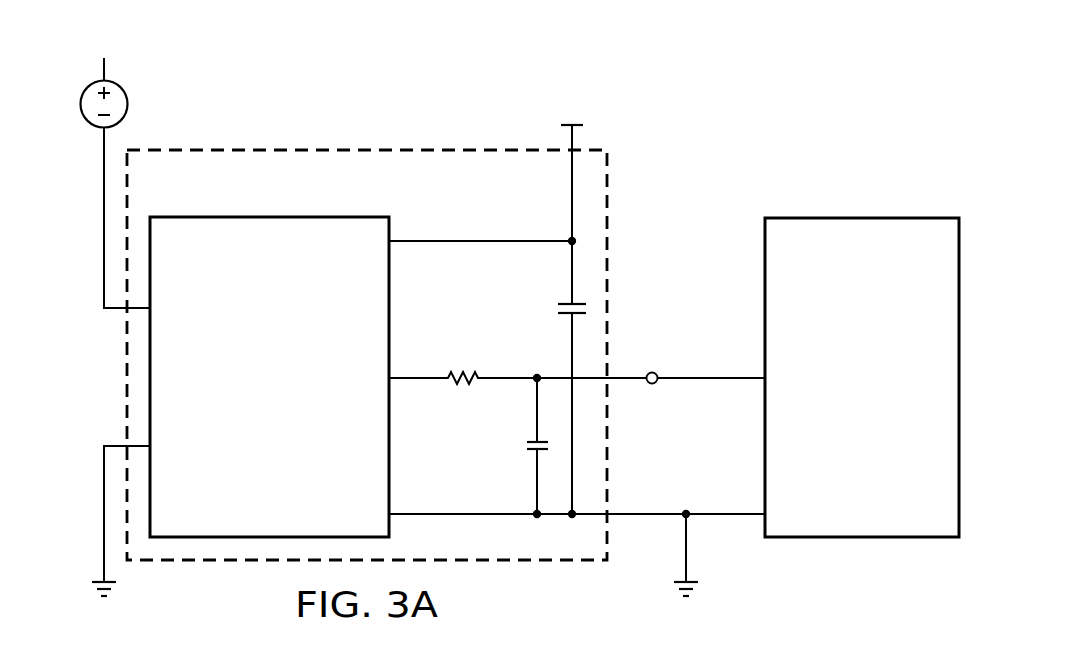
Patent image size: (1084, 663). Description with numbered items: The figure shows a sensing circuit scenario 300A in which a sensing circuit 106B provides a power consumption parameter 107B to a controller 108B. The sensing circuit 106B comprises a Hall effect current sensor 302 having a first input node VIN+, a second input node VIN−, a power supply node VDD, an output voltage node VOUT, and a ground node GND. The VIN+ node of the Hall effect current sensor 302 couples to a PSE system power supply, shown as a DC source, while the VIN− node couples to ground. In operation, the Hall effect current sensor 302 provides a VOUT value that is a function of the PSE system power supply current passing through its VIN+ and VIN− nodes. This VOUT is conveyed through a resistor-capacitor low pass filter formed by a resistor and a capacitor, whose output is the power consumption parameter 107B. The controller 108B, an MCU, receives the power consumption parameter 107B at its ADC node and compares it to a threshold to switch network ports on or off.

The sensing circuit scenario 300A is at (683, 92).
The sensing circuit 106B is at (247, 149).
The Hall effect current sensor 302 is at (268, 216).
The power consumption parameter 107B is at (708, 375).
The controller 108B is at (862, 216).